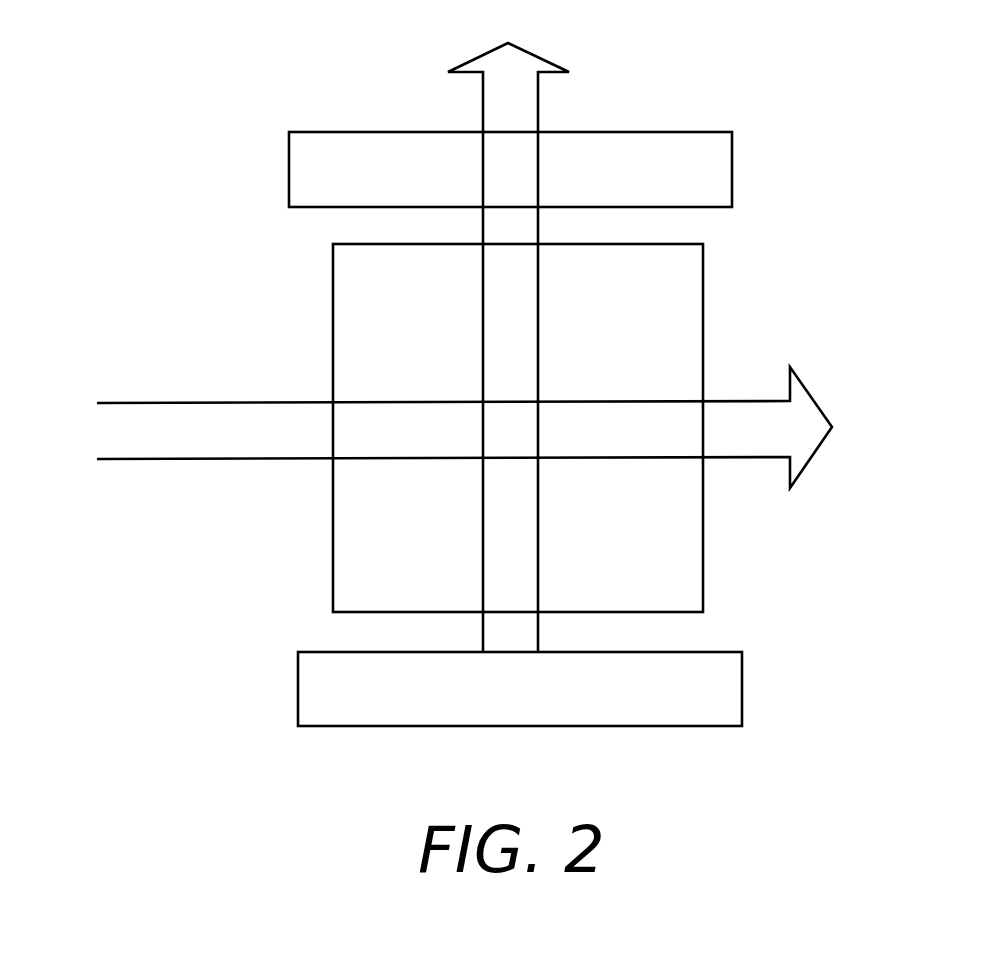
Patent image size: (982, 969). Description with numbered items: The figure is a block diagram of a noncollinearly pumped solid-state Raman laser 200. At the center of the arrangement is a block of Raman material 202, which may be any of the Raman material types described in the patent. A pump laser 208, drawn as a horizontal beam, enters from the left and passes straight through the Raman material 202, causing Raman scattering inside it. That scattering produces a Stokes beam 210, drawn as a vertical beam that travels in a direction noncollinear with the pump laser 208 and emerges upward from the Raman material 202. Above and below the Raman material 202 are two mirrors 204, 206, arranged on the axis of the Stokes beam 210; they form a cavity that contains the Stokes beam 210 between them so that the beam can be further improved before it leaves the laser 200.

The solid-state Raman laser 200 is at (832, 82).
The Raman material 202 is at (703, 307).
The mirror 204 is at (742, 687).
The mirror 206 is at (289, 162).
The pump laser 208 is at (160, 403).
The Stokes beam 210 is at (538, 118).